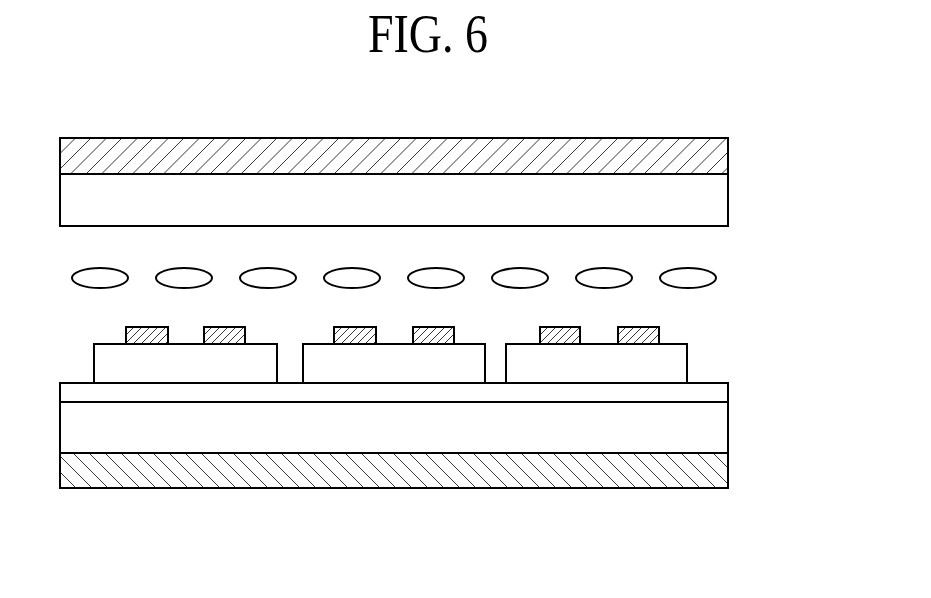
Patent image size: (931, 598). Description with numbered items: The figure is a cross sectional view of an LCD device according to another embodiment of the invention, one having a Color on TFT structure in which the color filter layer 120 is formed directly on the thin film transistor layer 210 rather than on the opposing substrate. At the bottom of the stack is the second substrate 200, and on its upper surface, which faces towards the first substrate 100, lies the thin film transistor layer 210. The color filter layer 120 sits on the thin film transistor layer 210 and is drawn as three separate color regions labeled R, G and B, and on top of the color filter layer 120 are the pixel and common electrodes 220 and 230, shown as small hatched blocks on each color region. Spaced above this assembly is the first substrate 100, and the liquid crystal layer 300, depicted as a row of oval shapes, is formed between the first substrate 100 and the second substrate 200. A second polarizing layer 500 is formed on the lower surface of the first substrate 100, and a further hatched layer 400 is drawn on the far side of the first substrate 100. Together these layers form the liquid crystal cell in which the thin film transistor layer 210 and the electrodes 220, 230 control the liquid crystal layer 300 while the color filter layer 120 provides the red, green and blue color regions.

The color filter / polarizing layer 400 is at (728, 152).
The first substrate 100 is at (728, 200).
The liquid crystal layer 300 is at (690, 267).
The color filter layer 120 is at (687, 363).
The thin film transistor layer 210 is at (728, 393).
The second substrate 200 is at (728, 428).
The second polarizing layer 500 is at (728, 468).
The pixel electrode 220 is at (562, 336).
The common electrode 230 is at (637, 336).